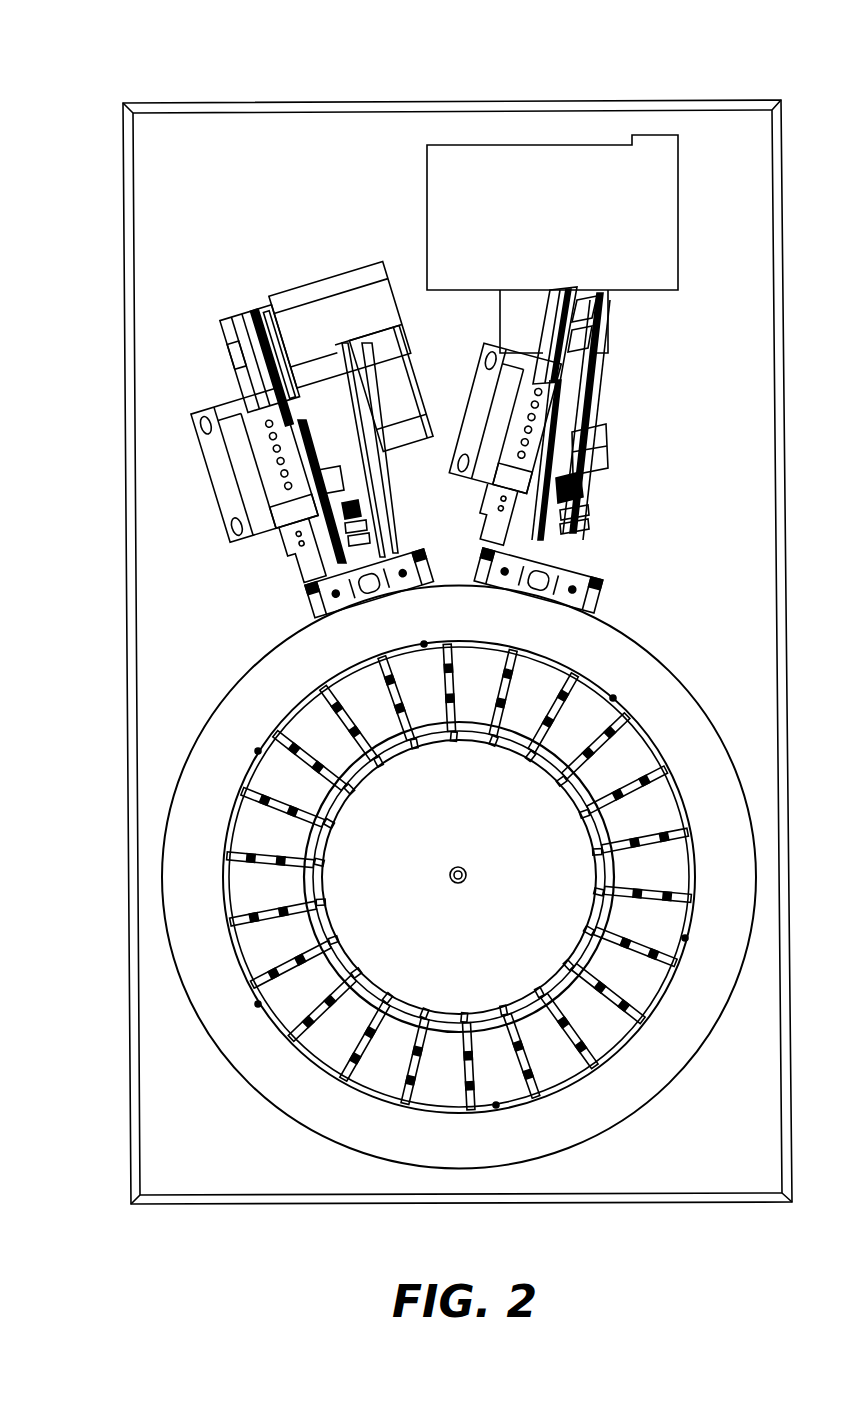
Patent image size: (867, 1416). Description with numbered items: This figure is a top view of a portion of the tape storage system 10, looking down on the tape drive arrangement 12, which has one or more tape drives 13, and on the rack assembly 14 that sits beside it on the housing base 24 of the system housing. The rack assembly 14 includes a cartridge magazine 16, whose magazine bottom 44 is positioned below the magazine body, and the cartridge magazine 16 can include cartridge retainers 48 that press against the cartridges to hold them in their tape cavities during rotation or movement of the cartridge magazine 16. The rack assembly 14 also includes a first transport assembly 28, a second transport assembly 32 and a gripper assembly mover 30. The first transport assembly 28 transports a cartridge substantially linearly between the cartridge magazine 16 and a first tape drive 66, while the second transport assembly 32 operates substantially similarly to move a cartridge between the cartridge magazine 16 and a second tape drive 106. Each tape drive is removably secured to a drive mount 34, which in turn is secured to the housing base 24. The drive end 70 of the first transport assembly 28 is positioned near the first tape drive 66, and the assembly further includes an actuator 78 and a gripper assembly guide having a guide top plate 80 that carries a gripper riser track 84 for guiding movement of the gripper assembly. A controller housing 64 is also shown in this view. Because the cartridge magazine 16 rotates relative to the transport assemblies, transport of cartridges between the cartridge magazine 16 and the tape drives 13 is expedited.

The tape storage system 10 is at (426, 603).
The tape drive arrangement 12 is at (454, 407).
The tape drive 13 is at (455, 436).
The rack assembly 14 is at (393, 877).
The cartridge magazine 16 is at (199, 970).
The housing base 24 is at (169, 1122).
The first transport assembly 28 is at (408, 877).
The gripper assembly mover 30 is at (321, 282).
The second transport assembly 32 is at (610, 598).
The drive mount 34 is at (215, 482).
The magazine bottom 44 is at (554, 913).
The cartridge retainer 48 is at (278, 722).
The controller housing 64 is at (662, 208).
The first tape drive 66 is at (285, 555).
The drive end 70 is at (303, 598).
The actuator 78 is at (400, 362).
The guide top plate 80 is at (410, 588).
The gripper riser track 84 is at (392, 545).
The second tape drive 106 is at (583, 380).